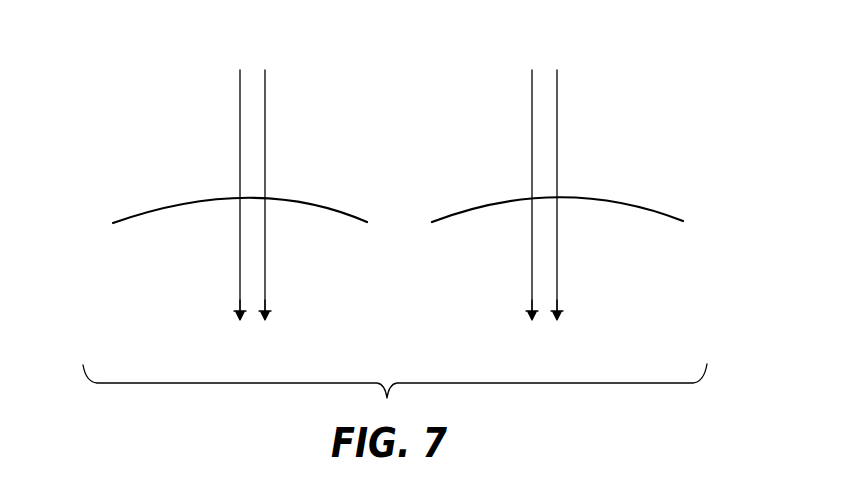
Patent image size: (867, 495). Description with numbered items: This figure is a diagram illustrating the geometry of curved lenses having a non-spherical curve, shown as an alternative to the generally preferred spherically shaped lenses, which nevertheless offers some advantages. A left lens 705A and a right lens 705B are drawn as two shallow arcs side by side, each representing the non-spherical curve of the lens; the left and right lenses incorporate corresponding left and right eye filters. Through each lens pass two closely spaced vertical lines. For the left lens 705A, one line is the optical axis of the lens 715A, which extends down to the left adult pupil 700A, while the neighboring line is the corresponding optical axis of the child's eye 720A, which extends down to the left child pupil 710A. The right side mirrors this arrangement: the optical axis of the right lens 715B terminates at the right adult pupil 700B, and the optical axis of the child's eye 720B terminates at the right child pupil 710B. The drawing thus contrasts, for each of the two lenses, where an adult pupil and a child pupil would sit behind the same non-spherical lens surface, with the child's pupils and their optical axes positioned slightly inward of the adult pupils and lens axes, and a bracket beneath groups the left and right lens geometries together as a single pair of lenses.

The left lens 705A is at (126, 190).
The right lens 705B is at (674, 189).
The optical axis of the left lens 715A is at (238, 66).
The optical axis of child's left eye 720A is at (267, 66).
The optical axis of the right lens 715B is at (559, 66).
The optical axis of child's right eye 720B is at (530, 66).
The left adult pupil 700A is at (230, 308).
The left child pupil 710A is at (277, 309).
The right adult pupil 700B is at (570, 310).
The right child pupil 710B is at (520, 310).